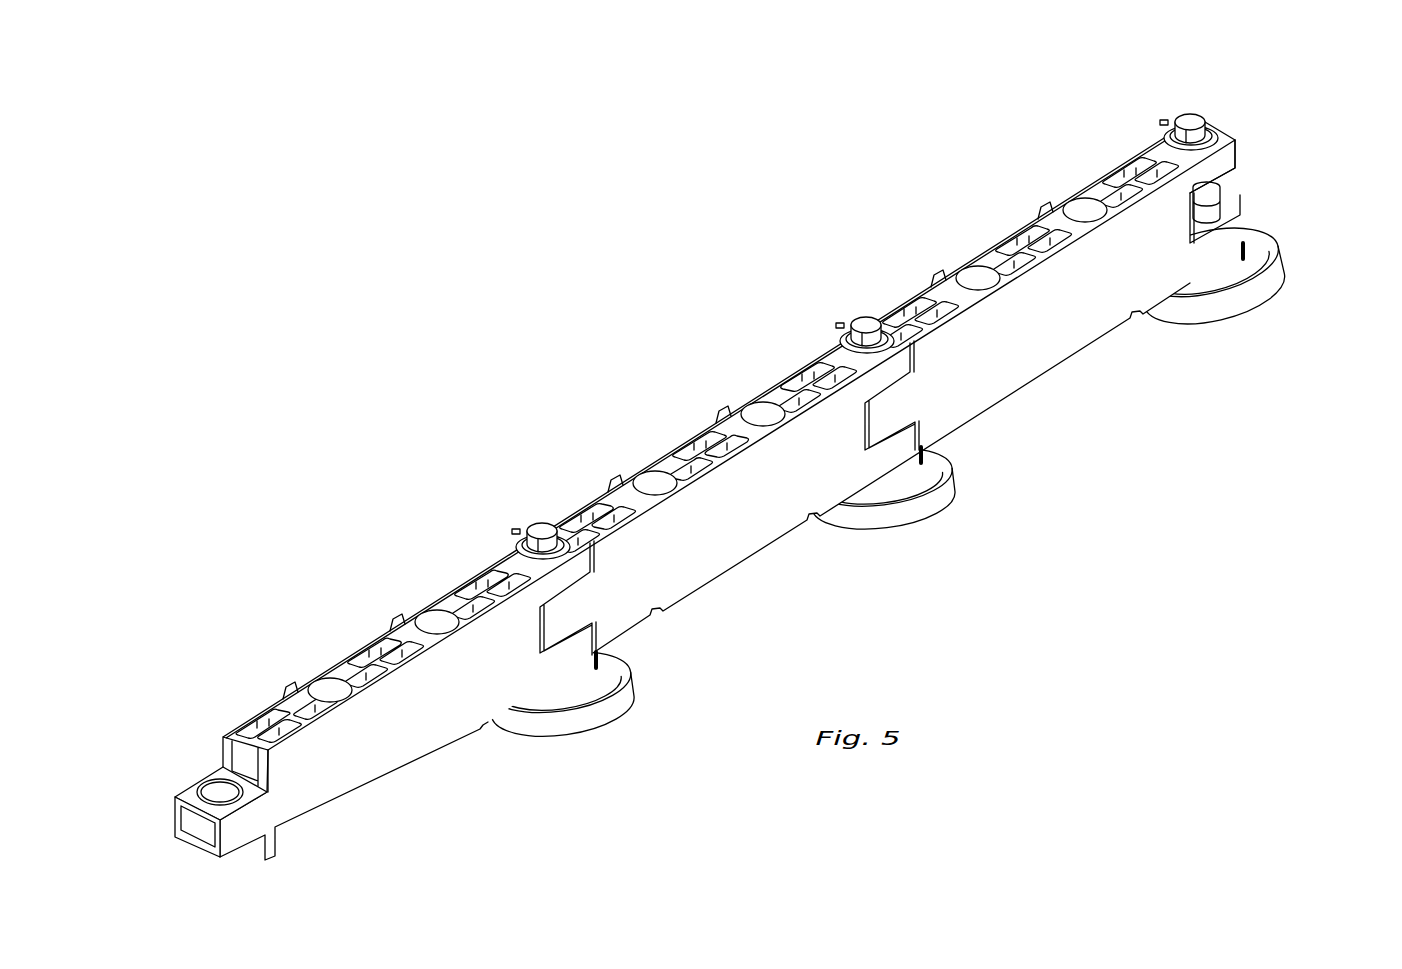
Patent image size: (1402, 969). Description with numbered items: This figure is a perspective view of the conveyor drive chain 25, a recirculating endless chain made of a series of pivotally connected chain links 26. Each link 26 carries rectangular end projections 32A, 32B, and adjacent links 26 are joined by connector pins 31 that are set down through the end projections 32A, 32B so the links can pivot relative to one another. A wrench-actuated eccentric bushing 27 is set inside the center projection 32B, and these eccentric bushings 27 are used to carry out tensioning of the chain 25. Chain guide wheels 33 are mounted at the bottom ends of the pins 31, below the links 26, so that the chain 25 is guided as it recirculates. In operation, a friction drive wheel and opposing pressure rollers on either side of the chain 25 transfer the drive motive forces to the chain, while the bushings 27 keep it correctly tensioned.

The drive chain 25 is at (670, 402).
The chain link 26 is at (385, 752).
The eccentric bushing 27 is at (1220, 208).
The connector pin 31 is at (538, 522).
The rectangular end projection 32A is at (1230, 236).
The center projection 32B is at (243, 818).
The chain guide wheel 33 is at (558, 720).